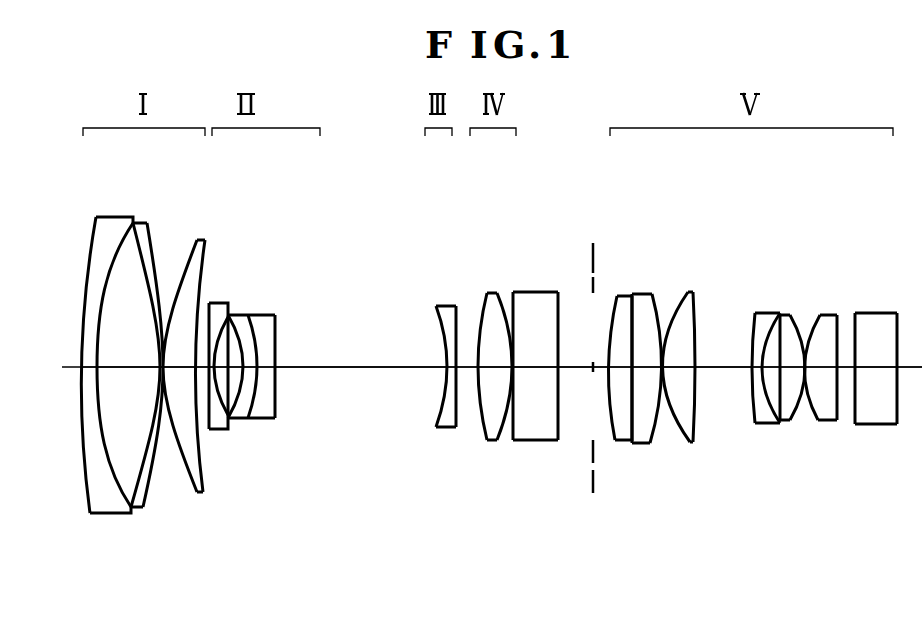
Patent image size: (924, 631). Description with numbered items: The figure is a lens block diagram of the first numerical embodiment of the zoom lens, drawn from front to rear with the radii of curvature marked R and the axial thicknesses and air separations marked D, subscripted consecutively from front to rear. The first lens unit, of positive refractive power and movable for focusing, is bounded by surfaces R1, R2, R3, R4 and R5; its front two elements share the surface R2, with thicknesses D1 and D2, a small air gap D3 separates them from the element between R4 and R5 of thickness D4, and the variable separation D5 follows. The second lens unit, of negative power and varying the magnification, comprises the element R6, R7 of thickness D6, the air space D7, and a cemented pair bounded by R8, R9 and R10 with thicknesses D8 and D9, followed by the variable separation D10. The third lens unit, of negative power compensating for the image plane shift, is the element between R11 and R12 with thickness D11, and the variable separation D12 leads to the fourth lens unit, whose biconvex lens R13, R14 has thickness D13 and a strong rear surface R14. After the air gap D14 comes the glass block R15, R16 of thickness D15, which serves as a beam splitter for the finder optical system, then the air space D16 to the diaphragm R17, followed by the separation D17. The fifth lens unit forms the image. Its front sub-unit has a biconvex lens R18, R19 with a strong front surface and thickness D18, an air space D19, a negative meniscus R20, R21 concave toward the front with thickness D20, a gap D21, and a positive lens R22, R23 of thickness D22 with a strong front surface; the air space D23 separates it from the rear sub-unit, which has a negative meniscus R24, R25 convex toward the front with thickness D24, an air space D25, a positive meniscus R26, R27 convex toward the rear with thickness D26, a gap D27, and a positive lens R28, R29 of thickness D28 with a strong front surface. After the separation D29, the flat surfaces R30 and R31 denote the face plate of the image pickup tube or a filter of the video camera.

The first lens surface R1 is at (82, 279).
The second lens surface R2 is at (102, 284).
The third lens surface R3 is at (154, 294).
The fourth lens surface R4 is at (176, 294).
The fifth lens surface R5 is at (196, 292).
The sixth lens surface R6 is at (207, 312).
The seventh lens surface R7 is at (219, 305).
The eighth lens surface R8 is at (244, 314).
The ninth lens surface R9 is at (260, 314).
The tenth lens surface R10 is at (278, 316).
The eleventh lens surface R11 is at (430, 315).
The twelfth lens surface R12 is at (456, 312).
The thirteenth lens surface R13 is at (476, 316).
The fourteenth lens surface R14 is at (486, 312).
The front surface of glass block R15 is at (510, 310).
The rear surface of glass block R16 is at (566, 312).
The stop R17 is at (593, 268).
The eighteenth lens surface R18 is at (612, 318).
The nineteenth lens surface R19 is at (631, 314).
The twentieth lens surface R20 is at (637, 314).
The twenty-first lens surface R21 is at (656, 315).
The twenty-second lens surface R22 is at (667, 314).
The twenty-third lens surface R23 is at (696, 320).
The twenty-fourth lens surface R24 is at (753, 330).
The twenty-fifth lens surface R25 is at (777, 308).
The twenty-sixth lens surface R26 is at (783, 304).
The twenty-seventh lens surface R27 is at (803, 312).
The twenty-eighth lens surface R28 is at (815, 312).
The twenty-ninth lens surface R29 is at (844, 308).
The front surface of face plate R30 is at (867, 308).
The rear surface of face plate R31 is at (903, 308).
The axial thickness of first lens element D1 is at (100, 430).
The axial thickness of second lens element D2 is at (123, 372).
The air separation within first lens unit D3 is at (145, 372).
The axial thickness of third lens element D4 is at (161, 375).
The variable separation between first and second lens units D5 is at (177, 372).
The axial thickness of first element of second lens unit D6 is at (198, 395).
The air separation within second lens unit D7 is at (230, 415).
The axial thickness of cemented element D8 is at (248, 385).
The axial thickness of cemented element D9 is at (266, 372).
The variable separation between second and third lens units D10 is at (346, 372).
The axial thickness of third lens unit D11 is at (448, 395).
The variable separation between third and fourth lens units D12 is at (470, 372).
The axial thickness of biconvex lens D13 is at (498, 372).
The air separation before glass block D14 is at (535, 372).
The axial thickness of glass block D15 is at (534, 385).
The air separation before stop D16 is at (573, 372).
The air separation after stop D17 is at (597, 372).
The axial thickness of lens V1-1 D18 is at (622, 372).
The air separation between lenses V1-1 and V1-2 D19 is at (634, 372).
The axial thickness of lens V1-2 D20 is at (648, 372).
The air separation between lenses V1-2 and V1-3 D21 is at (663, 372).
The axial thickness of lens V1-3 D22 is at (680, 372).
The air separation between sub-units V1 and V2 D23 is at (718, 372).
The axial thickness of lens V2-1 D24 is at (765, 372).
The air separation between lenses V2-1 and V2-2 D25 is at (773, 372).
The axial thickness of lens V2-2 D26 is at (788, 372).
The air separation between lenses V2-2 and V2-3 D27 is at (810, 372).
The axial thickness of lens V2-3 D28 is at (833, 372).
The air separation before face plate D29 is at (852, 372).